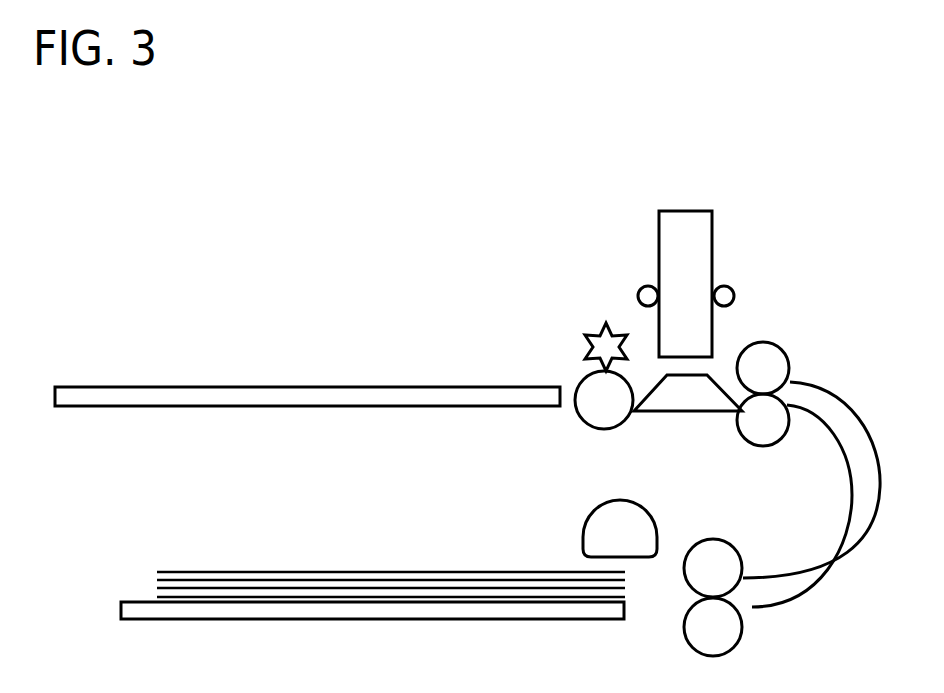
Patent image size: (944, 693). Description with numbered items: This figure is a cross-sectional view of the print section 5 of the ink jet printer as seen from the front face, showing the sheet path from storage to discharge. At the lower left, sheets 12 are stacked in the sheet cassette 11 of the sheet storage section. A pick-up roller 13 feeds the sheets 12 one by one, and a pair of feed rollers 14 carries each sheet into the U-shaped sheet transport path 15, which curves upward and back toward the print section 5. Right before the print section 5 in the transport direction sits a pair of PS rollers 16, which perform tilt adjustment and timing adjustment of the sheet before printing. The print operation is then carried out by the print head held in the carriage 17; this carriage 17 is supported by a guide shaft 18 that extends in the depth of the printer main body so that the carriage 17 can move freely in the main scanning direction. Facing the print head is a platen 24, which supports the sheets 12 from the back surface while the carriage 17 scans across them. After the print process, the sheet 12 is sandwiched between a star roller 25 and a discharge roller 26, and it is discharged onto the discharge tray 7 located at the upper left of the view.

The print section 5 is at (758, 318).
The discharge tray 7 is at (155, 387).
The sheet cassette 11 is at (168, 620).
The sheets 12 is at (190, 572).
The pick-up roller 13 is at (635, 557).
The pair of feed rollers 14 is at (730, 570).
The U-shaped sheet transport path 15 is at (864, 428).
The pair of PS rollers 16 is at (778, 410).
The carriage 17 is at (707, 223).
The guide shaft 18 is at (727, 296).
The platen 24 is at (690, 410).
The star roller 25 is at (592, 337).
The discharge roller 26 is at (583, 421).